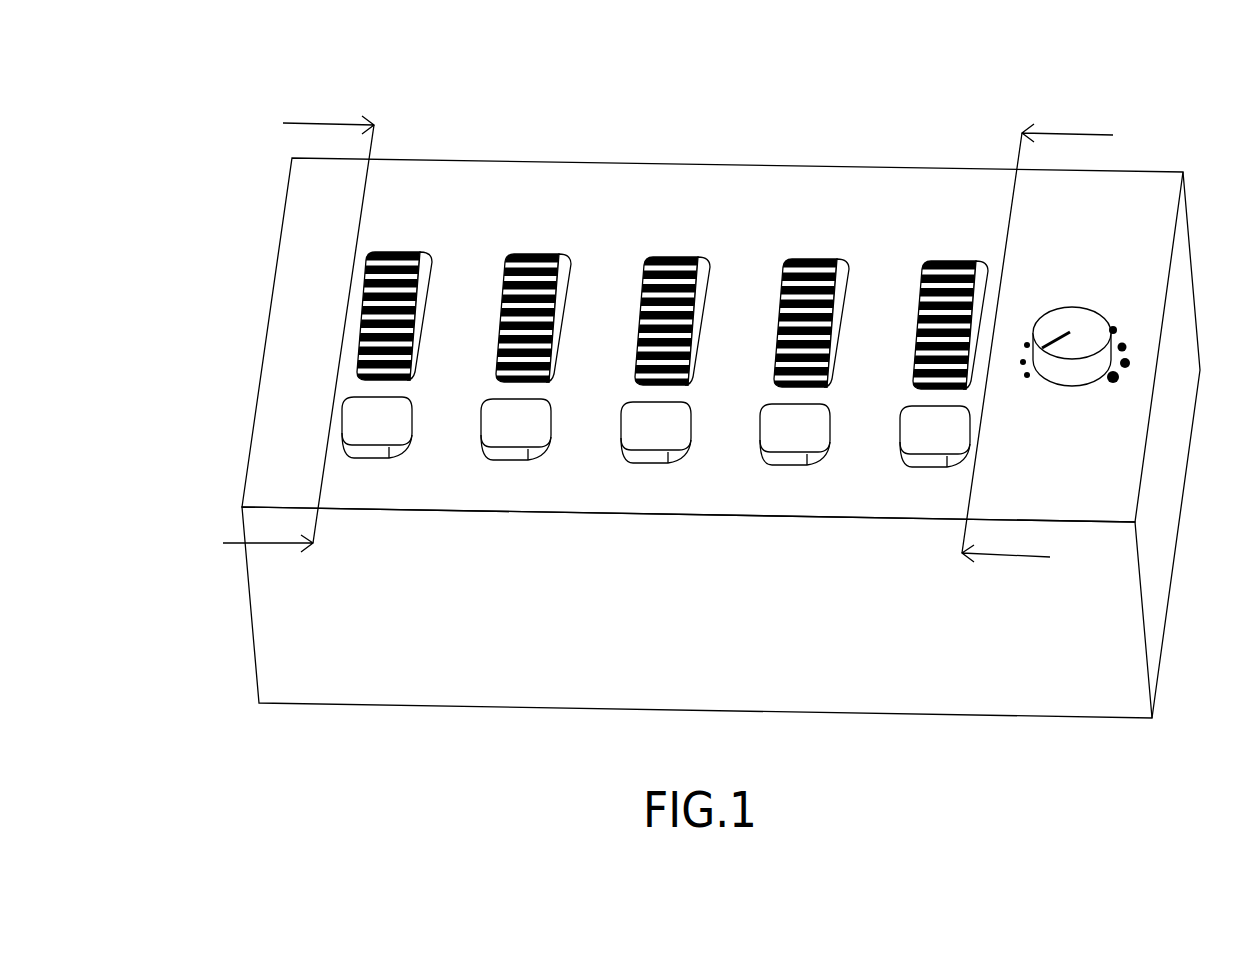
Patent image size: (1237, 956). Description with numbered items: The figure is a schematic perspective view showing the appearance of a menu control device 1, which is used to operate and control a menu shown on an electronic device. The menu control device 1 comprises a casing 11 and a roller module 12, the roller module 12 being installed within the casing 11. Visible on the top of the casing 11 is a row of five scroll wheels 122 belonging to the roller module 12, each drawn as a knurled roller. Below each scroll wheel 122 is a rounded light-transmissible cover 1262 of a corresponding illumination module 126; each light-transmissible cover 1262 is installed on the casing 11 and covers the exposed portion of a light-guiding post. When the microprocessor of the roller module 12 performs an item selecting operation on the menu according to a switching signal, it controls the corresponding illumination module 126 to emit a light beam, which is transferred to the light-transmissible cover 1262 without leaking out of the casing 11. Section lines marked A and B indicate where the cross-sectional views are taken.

The menu control device 1 is at (700, 378).
The casing 11 is at (782, 180).
The roller module 12 is at (671, 302).
The scroll wheel 122 is at (395, 252).
The illumination module 126 is at (656, 449).
The light-transmissible cover 1262 is at (383, 449).